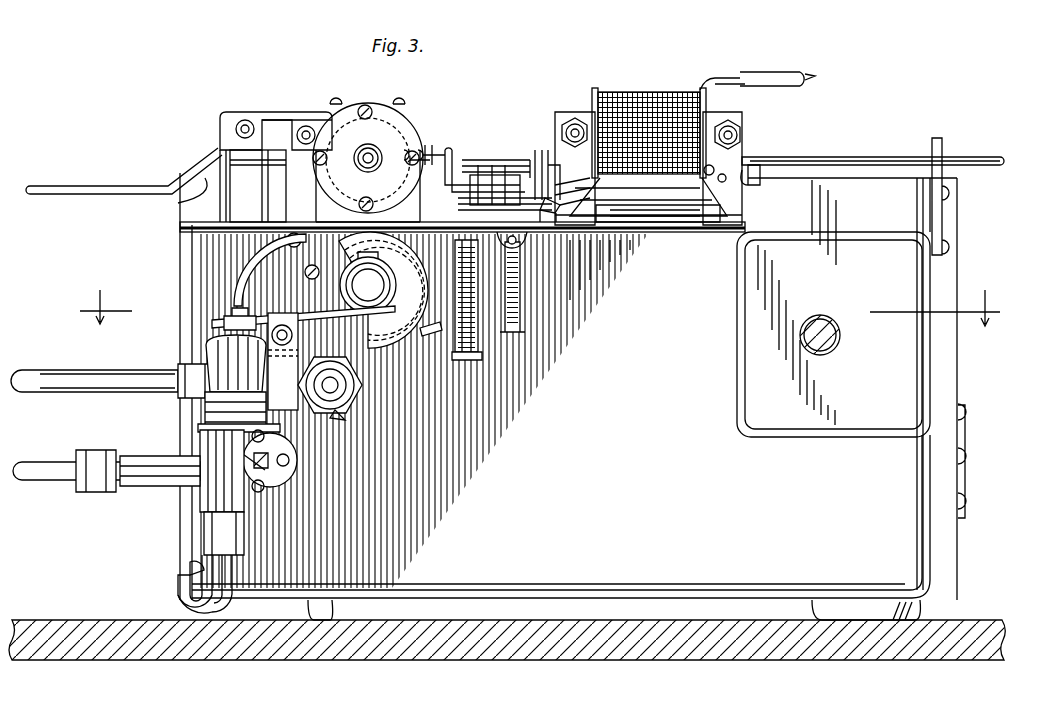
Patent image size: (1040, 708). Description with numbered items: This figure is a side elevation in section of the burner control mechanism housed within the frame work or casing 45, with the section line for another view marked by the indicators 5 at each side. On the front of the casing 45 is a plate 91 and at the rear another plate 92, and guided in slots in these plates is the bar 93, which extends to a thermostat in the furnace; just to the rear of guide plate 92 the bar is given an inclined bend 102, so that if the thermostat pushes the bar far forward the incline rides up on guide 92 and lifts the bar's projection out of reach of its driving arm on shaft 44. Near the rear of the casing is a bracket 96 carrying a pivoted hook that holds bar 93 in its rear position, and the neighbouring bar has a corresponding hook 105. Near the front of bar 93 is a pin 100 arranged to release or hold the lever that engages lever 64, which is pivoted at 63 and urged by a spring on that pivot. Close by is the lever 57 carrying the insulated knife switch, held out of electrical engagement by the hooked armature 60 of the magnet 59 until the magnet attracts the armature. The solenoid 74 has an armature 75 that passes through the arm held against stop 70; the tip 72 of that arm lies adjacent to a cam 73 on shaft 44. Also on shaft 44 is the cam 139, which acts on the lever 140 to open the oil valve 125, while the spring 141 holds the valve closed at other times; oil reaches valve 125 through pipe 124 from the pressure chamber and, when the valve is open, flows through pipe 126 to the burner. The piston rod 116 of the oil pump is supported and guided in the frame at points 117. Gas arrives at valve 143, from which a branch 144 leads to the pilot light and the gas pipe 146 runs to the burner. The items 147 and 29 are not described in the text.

The casing 45 is at (573, 396).
The inclined bend 102 is at (205, 200).
The rear plate 92 is at (220, 152).
The hook 105 is at (292, 112).
The bracket 96 is at (300, 192).
The solenoid 74 is at (380, 108).
The armature 75 is at (368, 165).
The stop 70 is at (410, 140).
The lever 64 is at (548, 130).
The magnet 59 is at (672, 100).
The hooked armature 60 is at (660, 200).
The lever 57 is at (560, 215).
The bar 93 is at (866, 162).
The front plate 91 is at (944, 152).
The pin 100 is at (750, 178).
The section line 5 is at (540, 306).
The cam 139 is at (375, 258).
The shaft 44 is at (368, 282).
The tip 72 is at (372, 240).
The lever 140 is at (310, 310).
The gas pipe 146 is at (132, 378).
The spring 141 is at (335, 385).
The valve 143 is at (355, 400).
The branch 144 is at (340, 420).
The arm 147 is at (432, 330).
The cam 73 is at (485, 340).
The pivot 63 is at (482, 357).
The guide points 117 is at (290, 445).
The piston rod 116 is at (265, 468).
The valve 125 is at (215, 450).
The pipe 126 is at (40, 472).
The pipe 124 is at (180, 594).
The pin 29 is at (818, 316).